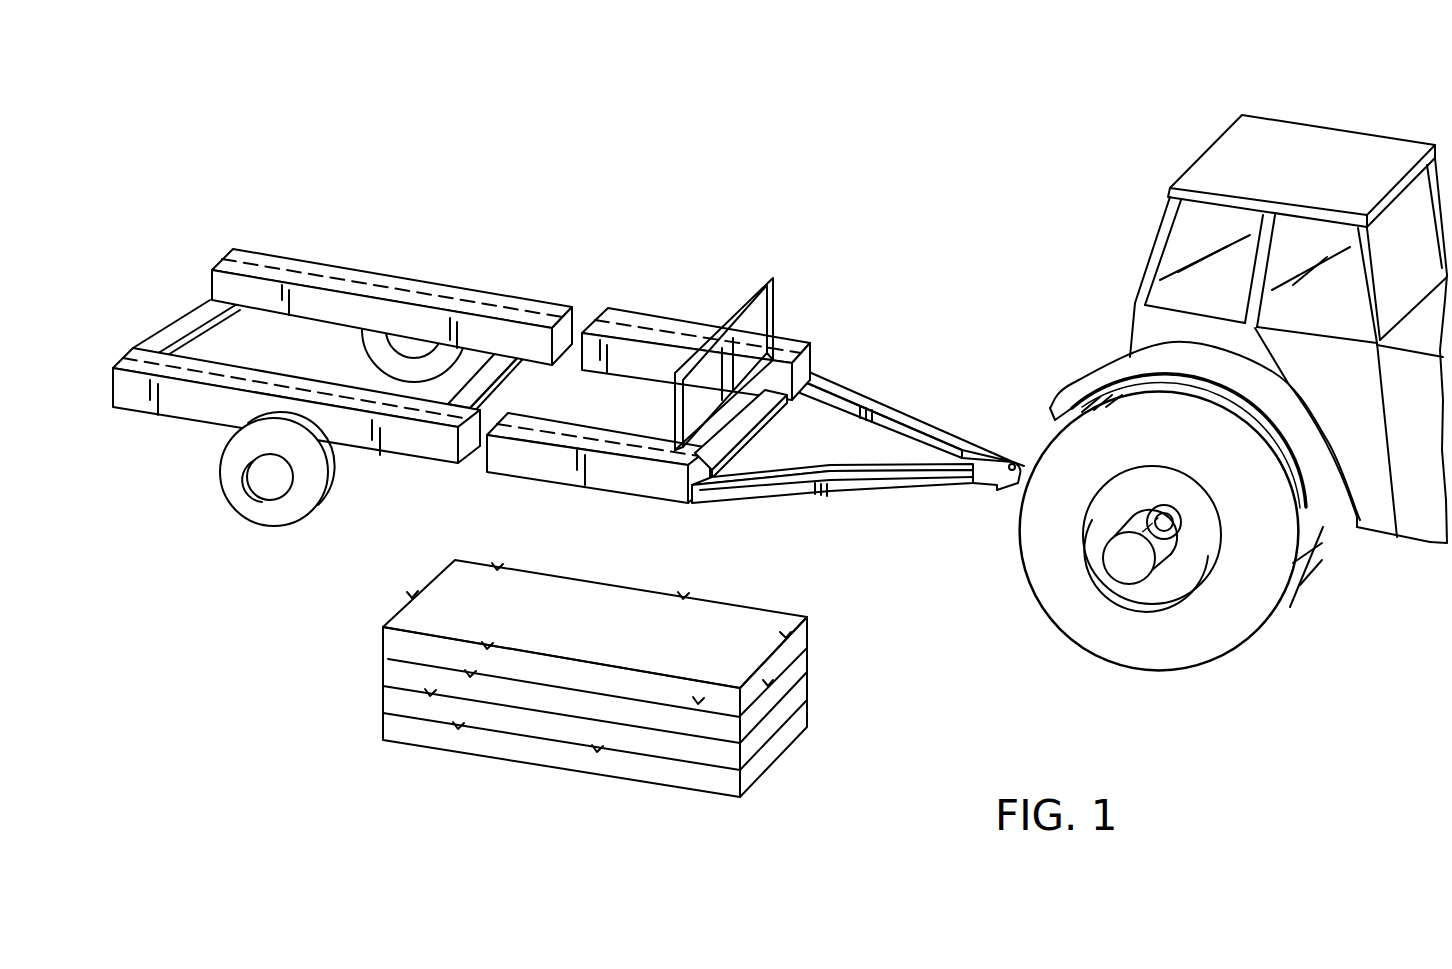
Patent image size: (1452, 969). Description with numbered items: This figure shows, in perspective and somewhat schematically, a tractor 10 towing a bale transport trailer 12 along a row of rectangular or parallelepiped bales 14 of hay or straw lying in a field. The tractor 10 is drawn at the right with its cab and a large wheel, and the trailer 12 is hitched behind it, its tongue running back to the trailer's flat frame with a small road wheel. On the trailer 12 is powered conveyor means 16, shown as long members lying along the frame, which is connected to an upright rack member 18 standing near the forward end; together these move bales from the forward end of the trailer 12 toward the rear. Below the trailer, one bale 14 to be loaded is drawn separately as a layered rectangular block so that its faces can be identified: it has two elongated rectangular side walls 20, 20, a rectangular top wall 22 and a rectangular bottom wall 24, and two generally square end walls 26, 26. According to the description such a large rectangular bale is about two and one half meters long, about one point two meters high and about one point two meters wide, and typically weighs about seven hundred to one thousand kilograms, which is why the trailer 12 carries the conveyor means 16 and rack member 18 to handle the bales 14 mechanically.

The tractor 10 is at (1138, 250).
The bale transport trailer 12 is at (657, 300).
The bale 14 is at (597, 691).
The powered conveyor means 16 is at (423, 268).
The rack member 18 is at (780, 312).
The side wall 20 is at (525, 748).
The top wall 22 is at (607, 642).
The bottom wall 24 is at (765, 770).
The end wall 26 is at (380, 650).